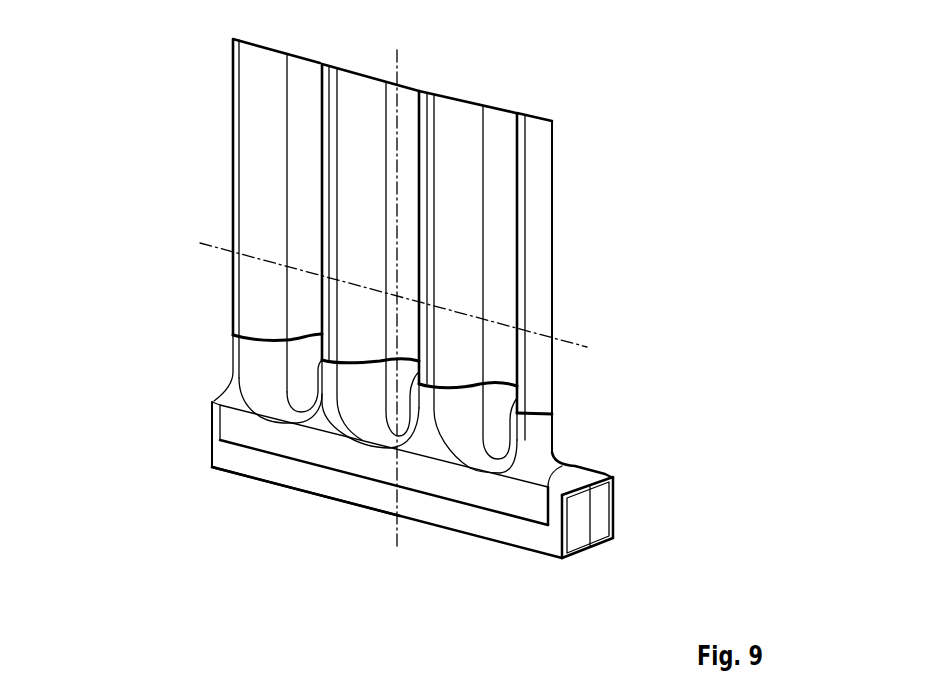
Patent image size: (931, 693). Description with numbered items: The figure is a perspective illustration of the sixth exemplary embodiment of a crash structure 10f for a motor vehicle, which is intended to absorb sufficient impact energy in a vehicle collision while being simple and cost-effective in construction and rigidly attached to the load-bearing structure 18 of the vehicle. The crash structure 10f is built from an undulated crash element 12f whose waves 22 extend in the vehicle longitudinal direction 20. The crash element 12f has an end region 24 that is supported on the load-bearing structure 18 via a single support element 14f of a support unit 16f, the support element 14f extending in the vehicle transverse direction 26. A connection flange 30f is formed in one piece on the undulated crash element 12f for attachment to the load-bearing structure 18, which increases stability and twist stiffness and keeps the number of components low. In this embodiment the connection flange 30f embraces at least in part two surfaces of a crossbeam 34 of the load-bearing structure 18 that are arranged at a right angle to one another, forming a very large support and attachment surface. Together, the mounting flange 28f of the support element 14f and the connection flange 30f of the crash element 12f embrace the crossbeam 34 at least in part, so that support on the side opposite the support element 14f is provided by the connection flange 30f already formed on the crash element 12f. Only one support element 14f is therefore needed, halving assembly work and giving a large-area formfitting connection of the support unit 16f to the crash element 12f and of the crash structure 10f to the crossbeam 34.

The crash structure 10f is at (191, 138).
The crash element 12f is at (463, 122).
The waves 22 is at (250, 200).
The support element 14f is at (250, 370).
The support unit 16f is at (186, 421).
The load-bearing structure 18 is at (252, 463).
The crossbeam 34 is at (306, 491).
The vehicle longitudinal direction 20 is at (397, 537).
The vehicle transverse direction 26 is at (580, 340).
The mounting flange 28f is at (492, 498).
The connection flange 30f is at (568, 460).
The end region 24 is at (627, 456).